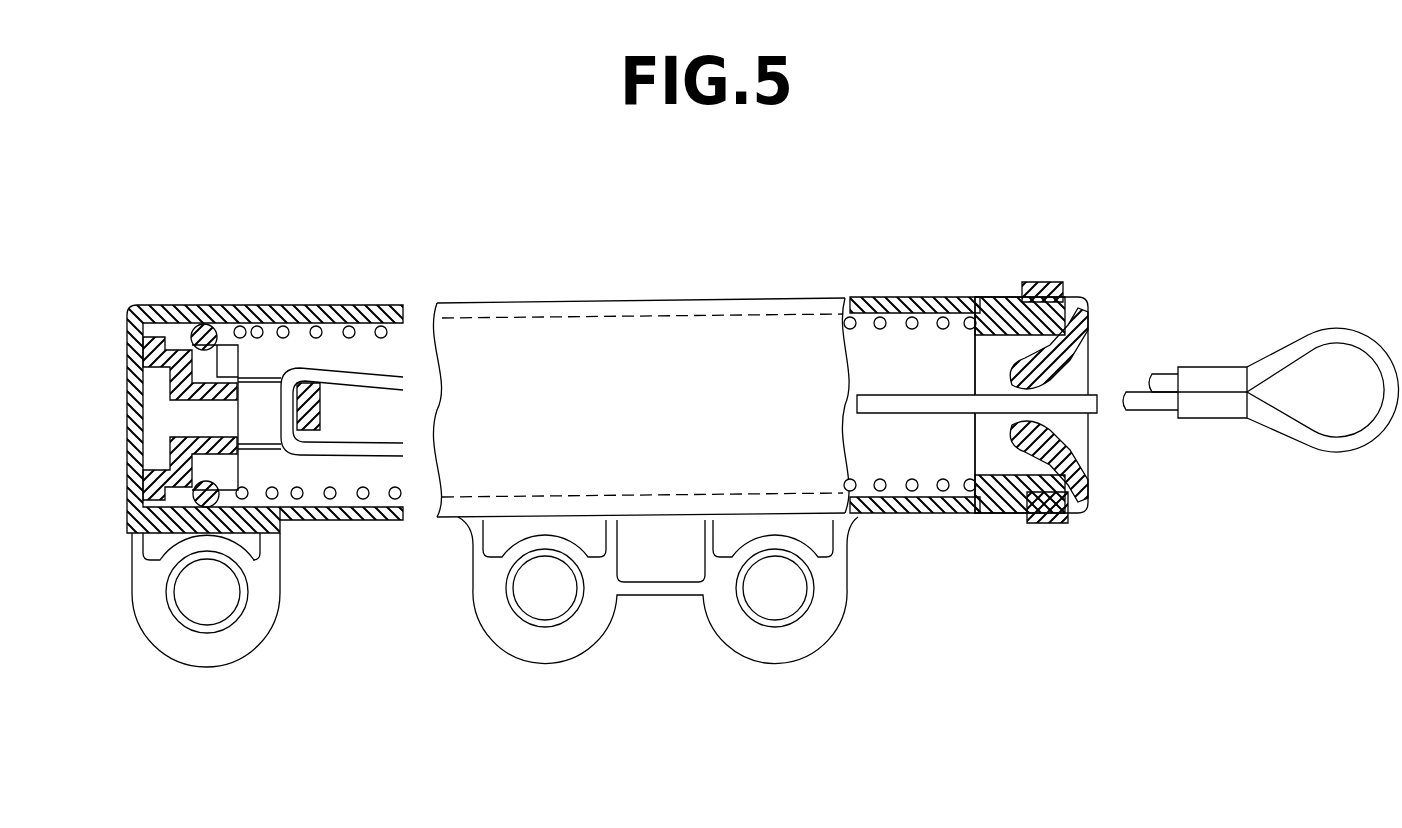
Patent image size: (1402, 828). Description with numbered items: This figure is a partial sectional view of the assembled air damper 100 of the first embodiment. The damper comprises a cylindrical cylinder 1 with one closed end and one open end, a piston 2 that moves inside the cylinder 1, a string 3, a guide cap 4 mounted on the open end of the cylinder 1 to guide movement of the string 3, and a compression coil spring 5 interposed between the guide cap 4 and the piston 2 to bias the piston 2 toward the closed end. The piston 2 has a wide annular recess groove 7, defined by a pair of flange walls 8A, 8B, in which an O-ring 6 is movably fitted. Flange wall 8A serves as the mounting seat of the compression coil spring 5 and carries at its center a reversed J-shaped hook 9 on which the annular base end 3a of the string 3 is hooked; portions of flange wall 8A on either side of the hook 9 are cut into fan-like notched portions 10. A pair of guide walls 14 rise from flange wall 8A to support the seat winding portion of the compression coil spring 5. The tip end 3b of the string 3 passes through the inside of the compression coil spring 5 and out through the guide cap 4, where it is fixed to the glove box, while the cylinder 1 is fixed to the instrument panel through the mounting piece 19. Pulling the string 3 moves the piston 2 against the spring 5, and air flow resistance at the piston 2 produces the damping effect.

The air damper 100 is at (676, 286).
The cylinder 1 is at (614, 350).
The piston 2 is at (168, 418).
The string 3 is at (933, 408).
The annular base end of the string 3a is at (306, 372).
The tip end of the string 3b is at (1332, 444).
The guide cap 4 is at (1078, 305).
The compression coil spring 5 is at (395, 500).
The O-ring 6 is at (209, 326).
The recess groove 7 is at (170, 497).
The flange wall 8A is at (250, 480).
The flange wall 8B is at (168, 330).
The hook 9 is at (311, 402).
The notched portions 10 is at (224, 371).
The guide walls 14 is at (283, 453).
The mounting piece 19 is at (226, 652).